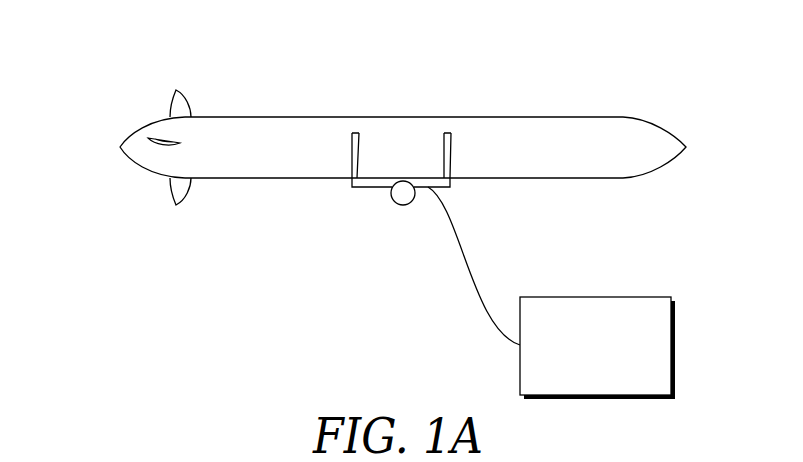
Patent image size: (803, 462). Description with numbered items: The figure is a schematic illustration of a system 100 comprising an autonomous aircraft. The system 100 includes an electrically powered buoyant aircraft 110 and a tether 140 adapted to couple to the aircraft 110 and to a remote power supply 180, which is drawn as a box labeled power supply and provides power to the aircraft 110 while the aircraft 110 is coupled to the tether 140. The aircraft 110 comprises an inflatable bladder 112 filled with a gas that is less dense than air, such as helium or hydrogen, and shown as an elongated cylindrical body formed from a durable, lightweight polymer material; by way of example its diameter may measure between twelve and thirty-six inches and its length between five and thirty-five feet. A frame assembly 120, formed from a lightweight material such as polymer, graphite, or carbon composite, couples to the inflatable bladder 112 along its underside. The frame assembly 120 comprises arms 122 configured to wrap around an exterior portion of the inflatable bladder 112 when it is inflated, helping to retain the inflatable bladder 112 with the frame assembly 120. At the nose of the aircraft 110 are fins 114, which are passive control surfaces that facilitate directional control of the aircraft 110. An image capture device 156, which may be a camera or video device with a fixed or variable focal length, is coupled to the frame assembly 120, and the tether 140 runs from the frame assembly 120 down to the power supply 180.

The system 100 is at (108, 55).
The aircraft 110 is at (648, 70).
The inflatable bladder 112 is at (565, 116).
The fins 114 is at (187, 100).
The frame assembly 120 is at (366, 188).
The arms 122 is at (352, 185).
The tether 140 is at (472, 288).
The image capture device 156 is at (403, 206).
The power supply 180 is at (660, 297).